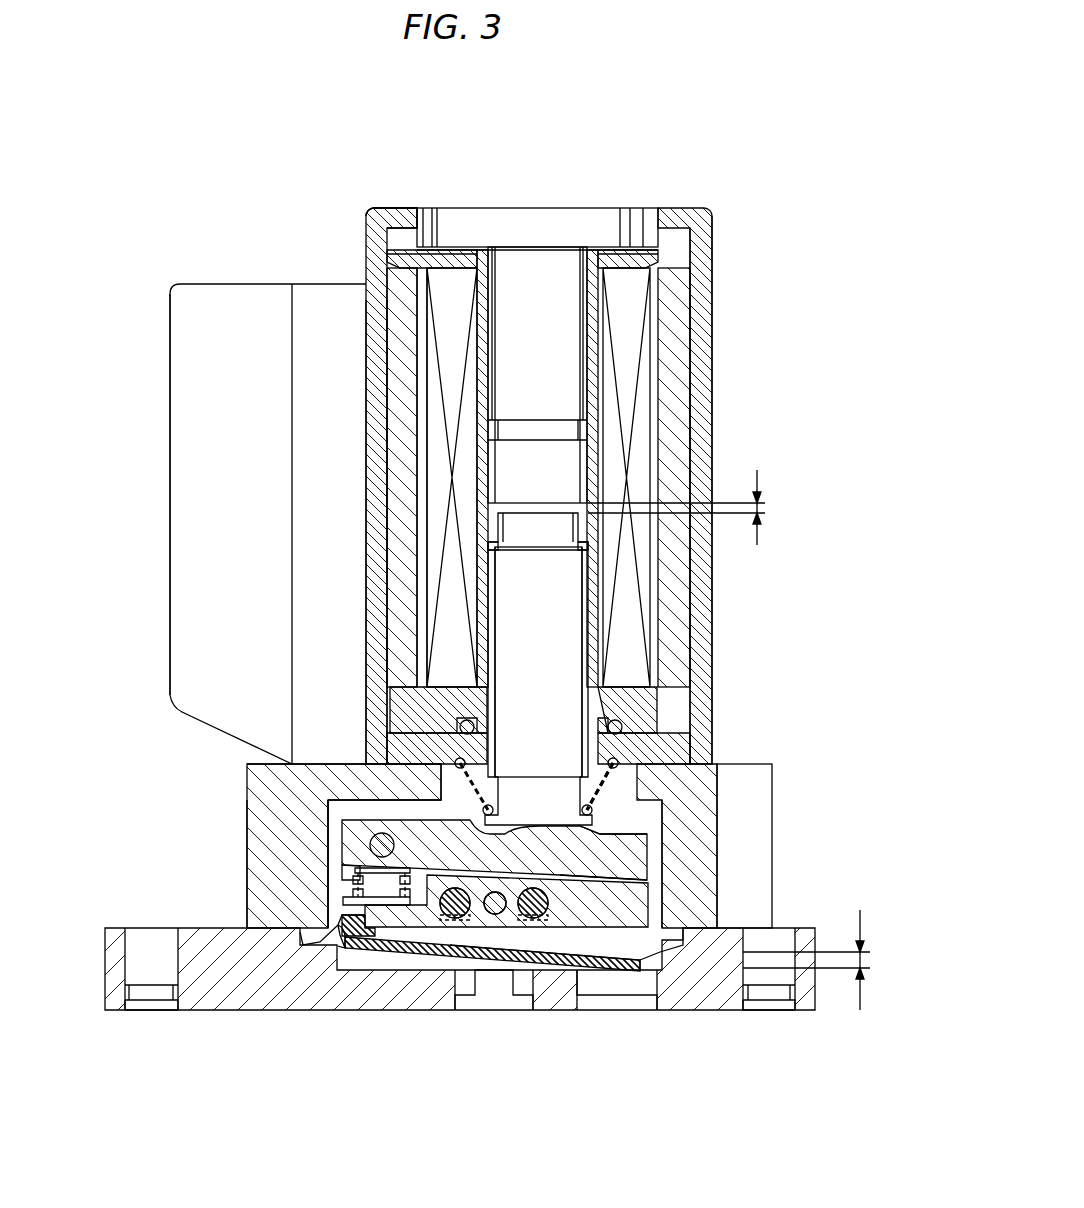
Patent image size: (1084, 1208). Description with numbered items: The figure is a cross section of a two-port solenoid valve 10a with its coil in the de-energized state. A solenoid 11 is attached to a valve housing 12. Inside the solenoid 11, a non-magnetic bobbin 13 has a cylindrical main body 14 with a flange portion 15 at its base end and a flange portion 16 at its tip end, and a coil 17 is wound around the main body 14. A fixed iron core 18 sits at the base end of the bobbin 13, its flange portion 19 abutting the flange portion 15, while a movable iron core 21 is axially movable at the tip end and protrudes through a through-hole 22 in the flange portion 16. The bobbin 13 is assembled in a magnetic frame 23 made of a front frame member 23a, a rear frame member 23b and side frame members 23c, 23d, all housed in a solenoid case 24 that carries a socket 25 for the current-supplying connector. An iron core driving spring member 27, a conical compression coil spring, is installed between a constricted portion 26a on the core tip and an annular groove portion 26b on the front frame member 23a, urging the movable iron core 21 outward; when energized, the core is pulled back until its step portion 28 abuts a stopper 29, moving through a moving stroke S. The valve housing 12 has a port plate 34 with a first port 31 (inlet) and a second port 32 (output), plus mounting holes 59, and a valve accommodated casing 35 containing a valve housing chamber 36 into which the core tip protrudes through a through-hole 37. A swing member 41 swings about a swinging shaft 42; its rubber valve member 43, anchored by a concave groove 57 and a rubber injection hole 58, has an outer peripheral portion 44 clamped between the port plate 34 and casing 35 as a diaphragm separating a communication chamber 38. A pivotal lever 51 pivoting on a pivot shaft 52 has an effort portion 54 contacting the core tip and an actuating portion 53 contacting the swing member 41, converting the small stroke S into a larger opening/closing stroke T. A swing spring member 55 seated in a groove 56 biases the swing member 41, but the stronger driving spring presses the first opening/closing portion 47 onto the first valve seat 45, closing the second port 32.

The solenoid valve 10a is at (718, 192).
The solenoid 11 is at (170, 288).
The valve housing 12 is at (245, 787).
The bobbin 13 is at (600, 453).
The cylindrical main body 14 is at (595, 600).
The flange portion 15 is at (395, 252).
The flange portion 16 is at (400, 705).
The coil 17 is at (650, 385).
The fixed iron core 18 is at (540, 260).
The flange portion 19 is at (612, 225).
The movable iron core 21 is at (555, 655).
The through-hole 22 is at (620, 695).
The magnetic frame 23 is at (700, 280).
The front frame member 23a is at (650, 740).
The rear frame member 23b is at (400, 235).
The side frame member 23c is at (395, 488).
The side frame member 23d is at (692, 314).
The solenoid case 24 is at (375, 380).
The socket 25 is at (190, 628).
The constricted portion 26a is at (592, 812).
The annular groove portion 26b is at (618, 766).
The iron core driving spring member 27 is at (400, 777).
The step portion 28 is at (580, 547).
The stopper 29 is at (490, 545).
The first port 31 is at (495, 990).
The second port 32 is at (625, 1000).
The port plate 34 is at (232, 990).
The valve accommodated casing 35 is at (257, 830).
The valve housing chamber 36 is at (335, 823).
The through-hole 37 is at (664, 822).
The communication chamber 38 is at (343, 940).
The swing member 41 is at (395, 950).
The swinging shaft 42 is at (355, 872).
The valve member 43 is at (570, 962).
The outer peripheral portion 44 is at (320, 958).
The first valve seat 45 is at (655, 962).
The first opening/closing portion 47 is at (620, 975).
The pivotal lever 51 is at (645, 845).
The pivot shaft 52 is at (368, 850).
The actuating portion 53 is at (600, 877).
The effort portion 54 is at (620, 830).
The swing spring member 55 is at (350, 878).
The groove 56 is at (358, 918).
The concave groove 57 is at (650, 900).
The rubber injection hole 58 is at (340, 918).
The mounting holes 59 is at (150, 975).
The moving stroke S is at (686, 507).
The opening/closing stroke T is at (818, 960).